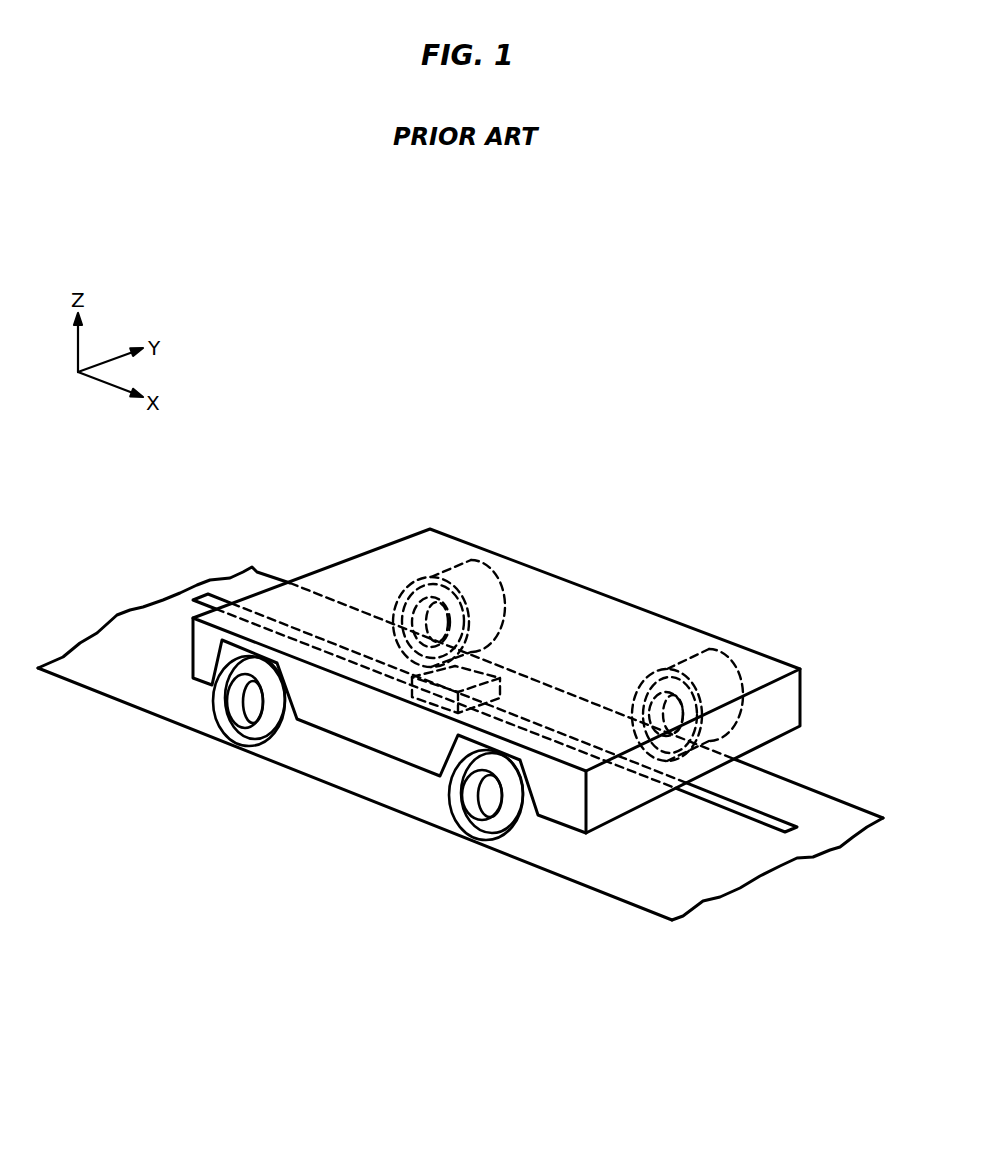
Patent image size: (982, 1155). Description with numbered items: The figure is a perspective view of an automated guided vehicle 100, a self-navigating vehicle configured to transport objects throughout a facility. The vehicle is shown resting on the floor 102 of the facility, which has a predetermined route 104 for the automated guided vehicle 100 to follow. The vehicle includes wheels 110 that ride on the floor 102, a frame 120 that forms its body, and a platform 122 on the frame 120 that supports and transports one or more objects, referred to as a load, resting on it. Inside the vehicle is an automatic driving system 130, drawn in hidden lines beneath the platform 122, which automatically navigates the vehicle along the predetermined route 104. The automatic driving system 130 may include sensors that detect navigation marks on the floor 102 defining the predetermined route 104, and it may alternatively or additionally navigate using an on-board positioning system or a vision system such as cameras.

The automated guided vehicle 100 is at (352, 416).
The floor 102 is at (656, 903).
The predetermined route 104 is at (744, 810).
The wheels 110 is at (472, 577).
The frame 120 is at (537, 681).
The platform 122 is at (582, 603).
The automatic driving system 130 is at (447, 702).